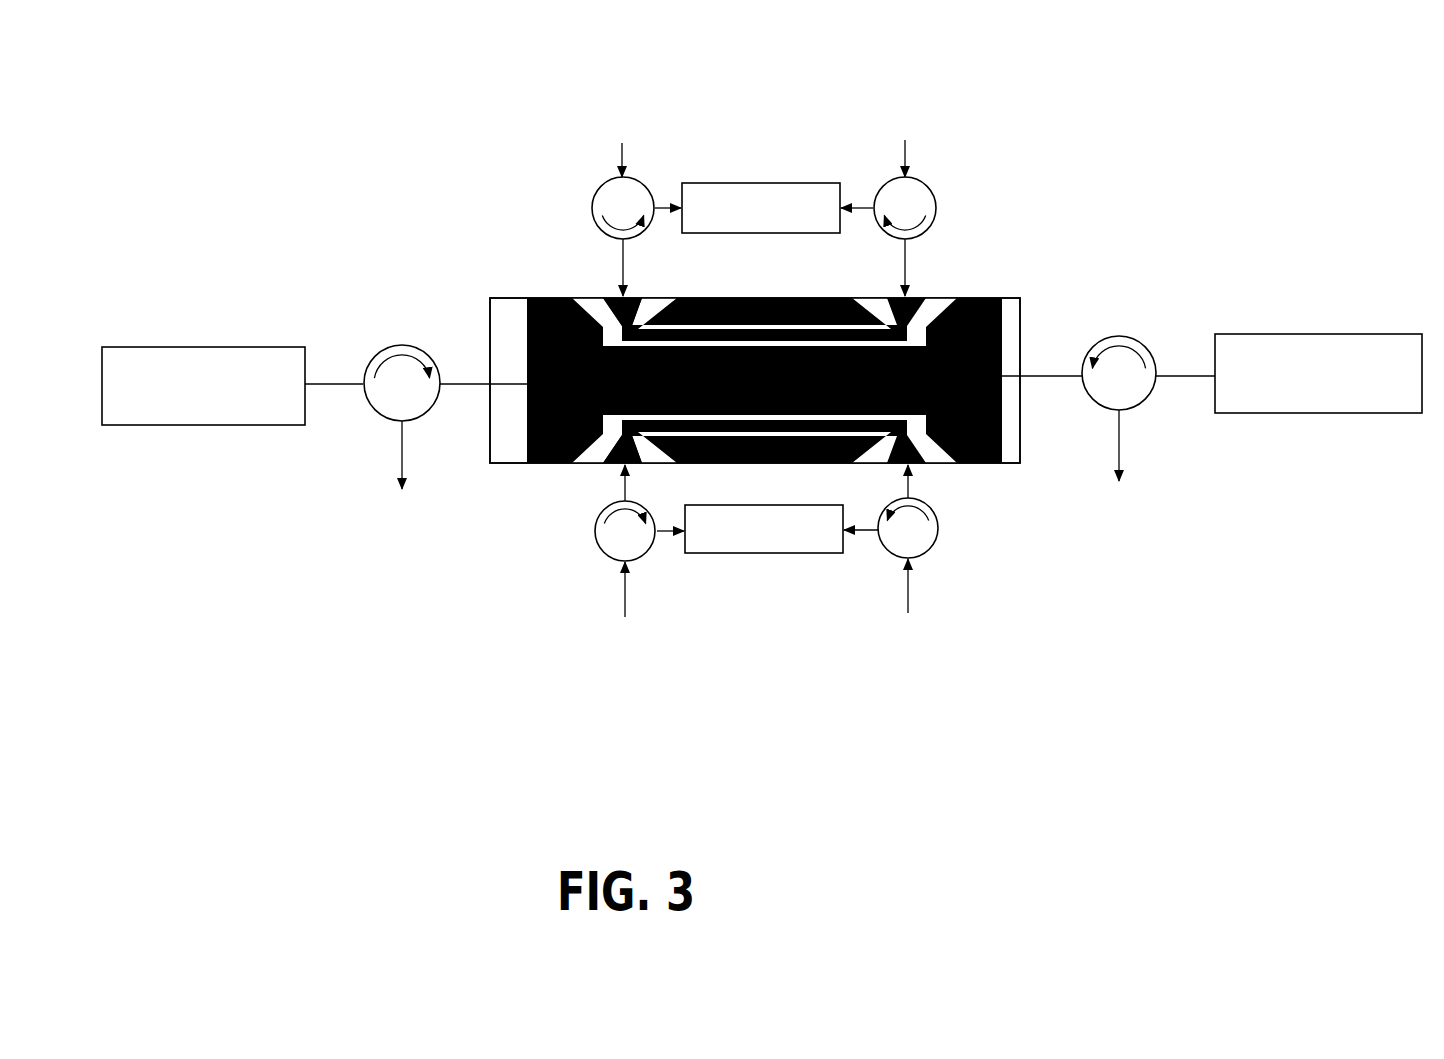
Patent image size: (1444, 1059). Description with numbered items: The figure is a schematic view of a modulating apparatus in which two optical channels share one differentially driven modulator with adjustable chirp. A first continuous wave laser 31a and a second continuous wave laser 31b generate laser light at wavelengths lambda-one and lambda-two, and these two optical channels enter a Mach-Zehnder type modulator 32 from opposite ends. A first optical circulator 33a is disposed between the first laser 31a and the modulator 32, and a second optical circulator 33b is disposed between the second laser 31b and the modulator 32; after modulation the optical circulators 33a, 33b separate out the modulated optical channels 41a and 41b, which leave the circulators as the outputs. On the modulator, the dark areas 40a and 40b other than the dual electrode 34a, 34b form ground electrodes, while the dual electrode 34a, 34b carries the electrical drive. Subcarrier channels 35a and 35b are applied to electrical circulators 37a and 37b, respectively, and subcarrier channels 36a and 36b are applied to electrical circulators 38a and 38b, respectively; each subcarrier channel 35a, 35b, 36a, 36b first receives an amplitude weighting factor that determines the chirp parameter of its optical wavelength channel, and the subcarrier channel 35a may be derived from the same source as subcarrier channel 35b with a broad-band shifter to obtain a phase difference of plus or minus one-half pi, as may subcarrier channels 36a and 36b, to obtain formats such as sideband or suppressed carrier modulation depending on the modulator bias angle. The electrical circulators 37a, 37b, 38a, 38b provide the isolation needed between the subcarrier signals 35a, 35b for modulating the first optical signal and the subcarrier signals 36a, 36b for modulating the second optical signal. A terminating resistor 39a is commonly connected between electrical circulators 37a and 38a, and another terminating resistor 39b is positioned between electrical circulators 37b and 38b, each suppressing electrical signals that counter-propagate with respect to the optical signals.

The first continuous wave laser 31a is at (203, 358).
The second continuous wave laser 31b is at (1318, 348).
The Mach-Zehnder type modulator 32 is at (1009, 329).
The first optical circulator 33a is at (403, 356).
The second optical circulator 33b is at (1121, 347).
The dual electrode 34a is at (607, 298).
The dual electrode 34b is at (618, 468).
The subcarrier channel 35a is at (636, 616).
The subcarrier channel 35b is at (620, 137).
The subcarrier channel 36a is at (912, 613).
The subcarrier channel 36b is at (909, 137).
The electrical circulator 37a is at (658, 553).
The electrical circulator 37b is at (544, 180).
The electrical circulator 38a is at (947, 535).
The electrical circulator 38b is at (948, 236).
The terminating resistor 39a is at (735, 553).
The terminating resistor 39b is at (764, 183).
The ground electrode 40a is at (481, 210).
The ground electrode 40b is at (977, 299).
The optical channel 41a is at (397, 482).
The optical channel 41b is at (1124, 473).